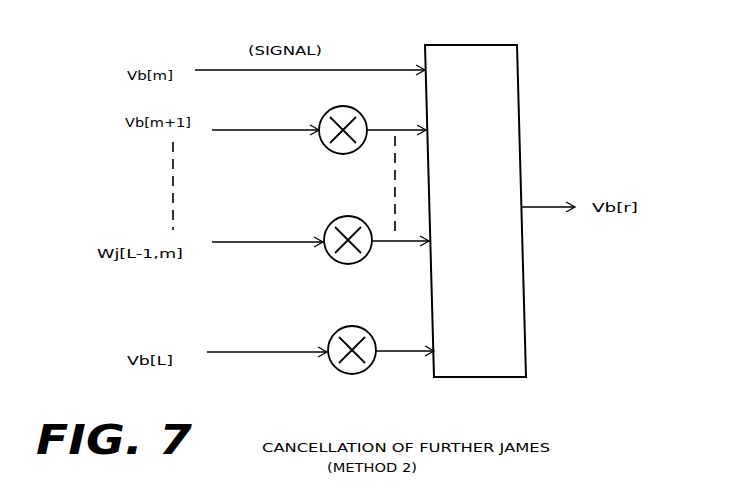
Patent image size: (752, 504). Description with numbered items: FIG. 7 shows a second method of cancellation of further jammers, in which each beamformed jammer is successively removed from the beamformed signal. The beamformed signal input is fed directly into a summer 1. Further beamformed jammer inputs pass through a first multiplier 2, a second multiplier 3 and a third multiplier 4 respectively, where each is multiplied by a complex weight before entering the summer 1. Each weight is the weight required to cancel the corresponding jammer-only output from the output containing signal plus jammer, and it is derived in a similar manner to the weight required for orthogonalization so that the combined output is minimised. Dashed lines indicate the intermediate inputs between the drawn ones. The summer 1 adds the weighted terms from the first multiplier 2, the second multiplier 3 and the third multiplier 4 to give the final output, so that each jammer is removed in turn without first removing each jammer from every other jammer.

The summer 1 is at (475, 211).
The multiplier for Vb[m+1] weighted by Wj[m+1,m] 2 is at (343, 154).
The multiplier for Vb[L-1] weighted by Wj[L-1,m] 3 is at (348, 264).
The multiplier for Vb[L] weighted by Wj[L,m] 4 is at (352, 374).